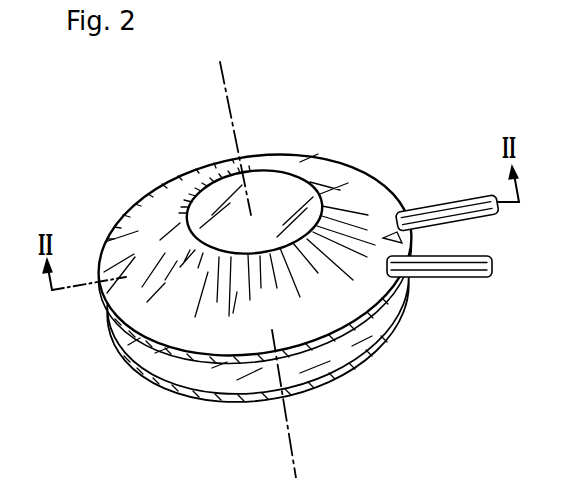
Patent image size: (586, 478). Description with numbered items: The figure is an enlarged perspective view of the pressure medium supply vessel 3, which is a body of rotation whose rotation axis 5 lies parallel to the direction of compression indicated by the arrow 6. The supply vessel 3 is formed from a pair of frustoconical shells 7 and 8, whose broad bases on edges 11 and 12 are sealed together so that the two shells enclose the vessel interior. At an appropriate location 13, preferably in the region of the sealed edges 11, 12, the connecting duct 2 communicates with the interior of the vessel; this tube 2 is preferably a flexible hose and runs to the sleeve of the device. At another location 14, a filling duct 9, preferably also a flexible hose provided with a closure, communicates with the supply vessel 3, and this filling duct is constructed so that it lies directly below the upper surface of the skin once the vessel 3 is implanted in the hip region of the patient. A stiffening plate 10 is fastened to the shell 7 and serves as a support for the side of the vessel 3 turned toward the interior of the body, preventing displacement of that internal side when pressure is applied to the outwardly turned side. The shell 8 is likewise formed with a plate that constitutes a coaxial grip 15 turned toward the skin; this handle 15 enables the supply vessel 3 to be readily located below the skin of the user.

The connecting duct 2 is at (453, 210).
The supply vessel 3 is at (208, 336).
The rotation axis 5 is at (228, 93).
The arrow 6 is at (212, 154).
The frustoconical shell 7 is at (298, 343).
The frustoconical shell 8 is at (317, 163).
The filling duct 9 is at (465, 268).
The stiffening plate 10 is at (158, 292).
The edge 11 is at (230, 338).
The edge 12 is at (239, 338).
The location 13 is at (388, 240).
The location 14 is at (392, 278).
The coaxial grip 15 is at (205, 202).